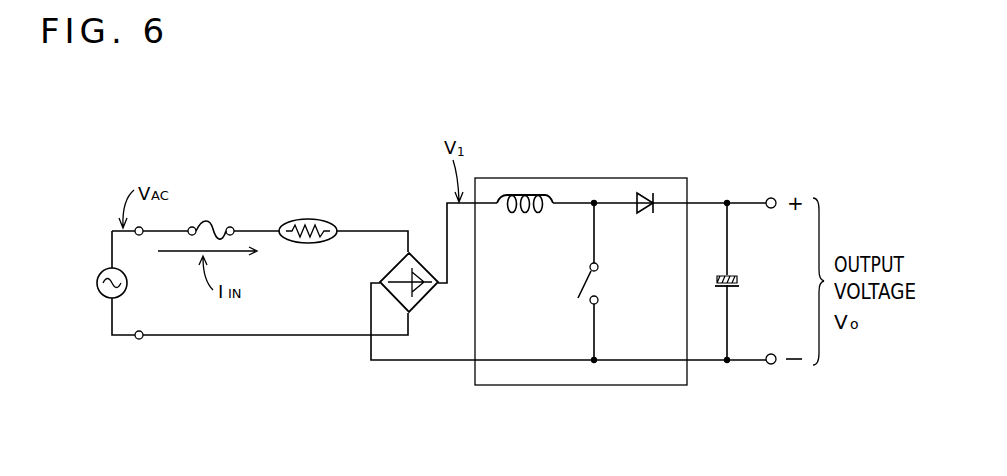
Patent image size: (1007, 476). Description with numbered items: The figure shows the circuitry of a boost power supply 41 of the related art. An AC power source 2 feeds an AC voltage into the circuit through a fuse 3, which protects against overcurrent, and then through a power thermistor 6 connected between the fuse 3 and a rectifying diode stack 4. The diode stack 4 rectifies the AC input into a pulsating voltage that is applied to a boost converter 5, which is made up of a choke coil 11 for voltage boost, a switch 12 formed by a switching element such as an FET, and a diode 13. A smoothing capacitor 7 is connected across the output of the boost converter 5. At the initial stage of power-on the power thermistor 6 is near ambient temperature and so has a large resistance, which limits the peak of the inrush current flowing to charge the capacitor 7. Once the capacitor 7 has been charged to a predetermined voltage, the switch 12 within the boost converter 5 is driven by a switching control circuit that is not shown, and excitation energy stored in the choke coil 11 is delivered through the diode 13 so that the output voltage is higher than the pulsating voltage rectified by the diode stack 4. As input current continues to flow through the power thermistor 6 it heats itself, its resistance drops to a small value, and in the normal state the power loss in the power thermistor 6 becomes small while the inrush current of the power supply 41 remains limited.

The AC power source 2 is at (103, 271).
The fuse 3 is at (212, 222).
The rectifying diode stack 4 is at (425, 298).
The boost converter 5 is at (665, 178).
The power thermistor 6 is at (310, 219).
The smoothing capacitor 7 is at (732, 288).
The choke coil 11 is at (526, 215).
The switch 12 is at (587, 285).
The diode 13 is at (645, 212).
The boost power supply 41 is at (407, 153).